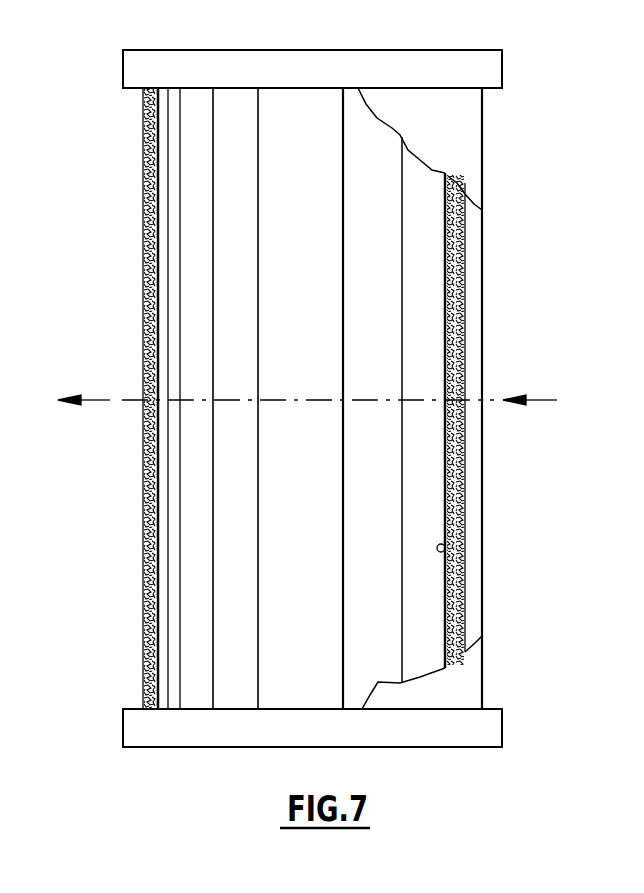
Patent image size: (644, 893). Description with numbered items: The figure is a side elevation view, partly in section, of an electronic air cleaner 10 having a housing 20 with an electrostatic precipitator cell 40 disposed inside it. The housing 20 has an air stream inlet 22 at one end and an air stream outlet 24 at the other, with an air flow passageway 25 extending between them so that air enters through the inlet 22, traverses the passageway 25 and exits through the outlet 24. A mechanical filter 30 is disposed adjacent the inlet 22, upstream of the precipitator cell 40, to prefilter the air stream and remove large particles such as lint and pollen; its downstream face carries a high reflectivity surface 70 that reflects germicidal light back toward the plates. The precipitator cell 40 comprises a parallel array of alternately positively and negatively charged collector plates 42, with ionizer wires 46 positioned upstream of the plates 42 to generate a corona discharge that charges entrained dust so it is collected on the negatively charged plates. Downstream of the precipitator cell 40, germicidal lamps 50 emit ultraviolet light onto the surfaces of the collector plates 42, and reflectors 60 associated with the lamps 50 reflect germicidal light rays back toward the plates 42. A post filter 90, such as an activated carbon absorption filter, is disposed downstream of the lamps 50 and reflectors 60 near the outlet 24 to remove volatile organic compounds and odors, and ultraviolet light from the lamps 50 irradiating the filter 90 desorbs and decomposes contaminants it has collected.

The electronic air cleaner 10 is at (552, 106).
The housing 20 is at (482, 684).
The air stream inlet 22 is at (482, 318).
The air stream outlet 24 is at (145, 313).
The air flow passageway 25 is at (251, 587).
The mechanical filter 30 is at (466, 256).
The electrostatic precipitator cell 40 is at (368, 120).
The collector plates 42 is at (315, 255).
The ionizer wires 46 is at (400, 492).
The germicidal lamp 50 is at (200, 208).
The reflectors 60 is at (172, 121).
The high reflectivity surface 70 is at (445, 546).
The post filter 90 is at (145, 586).